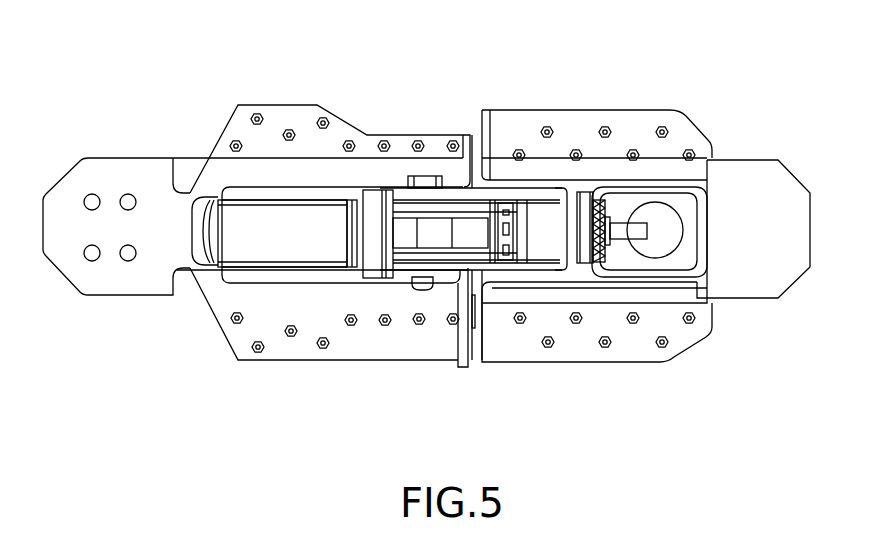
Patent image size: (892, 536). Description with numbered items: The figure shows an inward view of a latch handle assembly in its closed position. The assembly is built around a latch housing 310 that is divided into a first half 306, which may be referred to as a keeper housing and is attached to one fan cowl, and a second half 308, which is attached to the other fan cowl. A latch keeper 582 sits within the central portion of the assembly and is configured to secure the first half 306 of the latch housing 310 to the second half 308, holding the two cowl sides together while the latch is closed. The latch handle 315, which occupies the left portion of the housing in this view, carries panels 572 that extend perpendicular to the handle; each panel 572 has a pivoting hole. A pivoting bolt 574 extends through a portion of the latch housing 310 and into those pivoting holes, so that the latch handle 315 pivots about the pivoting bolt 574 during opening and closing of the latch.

The first half of latch housing 306 is at (598, 363).
The second half of latch housing 308 is at (307, 360).
The latch housing 310 is at (433, 362).
The latch handle 315 is at (245, 224).
The panels 572 is at (310, 208).
The pivoting bolt 574 is at (422, 182).
The latch keeper 582 is at (472, 235).